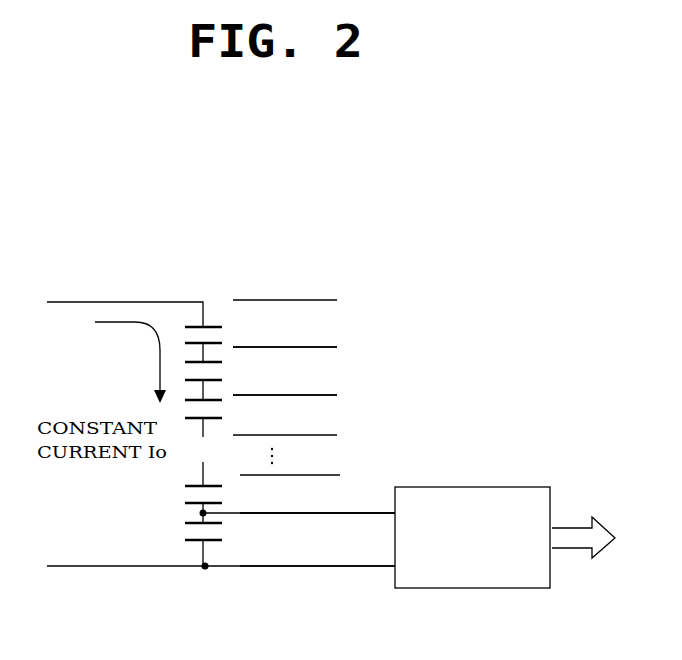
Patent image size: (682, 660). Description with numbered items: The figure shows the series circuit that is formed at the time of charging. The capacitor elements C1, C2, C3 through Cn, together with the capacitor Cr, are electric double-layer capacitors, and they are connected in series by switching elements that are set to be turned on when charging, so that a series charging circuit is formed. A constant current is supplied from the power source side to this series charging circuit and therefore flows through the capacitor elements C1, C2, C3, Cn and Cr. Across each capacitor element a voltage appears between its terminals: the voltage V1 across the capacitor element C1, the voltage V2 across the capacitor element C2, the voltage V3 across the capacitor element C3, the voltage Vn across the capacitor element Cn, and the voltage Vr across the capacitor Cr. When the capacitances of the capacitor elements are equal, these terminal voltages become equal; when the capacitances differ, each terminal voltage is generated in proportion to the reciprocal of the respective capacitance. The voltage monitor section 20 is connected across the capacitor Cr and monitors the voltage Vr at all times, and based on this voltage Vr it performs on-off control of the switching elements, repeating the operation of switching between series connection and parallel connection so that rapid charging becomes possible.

The voltage monitor section 20 is at (458, 487).
The capacitor element C1 is at (221, 336).
The capacitor element C2 is at (221, 373).
The capacitor element C3 is at (221, 413).
The capacitor element Cn is at (223, 493).
The capacitor Cr is at (222, 534).
The voltage between terminals V1 is at (285, 323).
The voltage between terminals V2 is at (285, 371).
The voltage between terminals V3 is at (285, 415).
The voltage between terminals Vn is at (317, 494).
The voltage between terminals of the capacitor Cr Vr is at (317, 539).